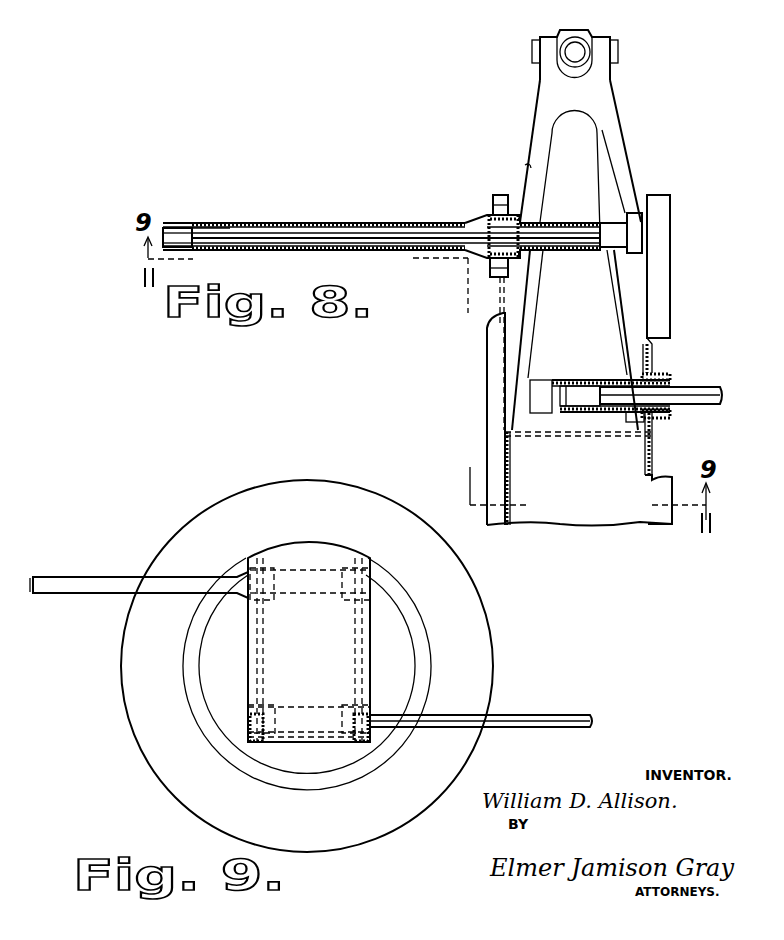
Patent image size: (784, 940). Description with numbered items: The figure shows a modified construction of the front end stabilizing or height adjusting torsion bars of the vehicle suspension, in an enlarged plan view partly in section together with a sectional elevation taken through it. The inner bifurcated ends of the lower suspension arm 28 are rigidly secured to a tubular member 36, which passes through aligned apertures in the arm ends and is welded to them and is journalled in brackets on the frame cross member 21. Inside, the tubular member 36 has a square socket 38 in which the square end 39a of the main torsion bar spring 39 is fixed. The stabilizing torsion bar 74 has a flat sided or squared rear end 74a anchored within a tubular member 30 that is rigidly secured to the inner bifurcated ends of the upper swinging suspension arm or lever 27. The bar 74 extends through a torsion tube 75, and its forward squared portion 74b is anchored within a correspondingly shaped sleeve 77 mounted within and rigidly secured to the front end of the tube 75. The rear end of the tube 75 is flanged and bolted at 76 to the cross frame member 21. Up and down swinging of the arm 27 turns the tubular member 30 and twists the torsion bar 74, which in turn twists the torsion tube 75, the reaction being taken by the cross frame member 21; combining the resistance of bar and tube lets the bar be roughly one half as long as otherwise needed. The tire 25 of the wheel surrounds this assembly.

In FIG. 8, the frame cross member 21 is at (493, 368).
In FIG. 9, the frame cross member 21 is at (312, 654).
In FIG. 9, the tire 25 is at (472, 610).
In FIG. 8, the upper swinging suspension arm or lever 27 is at (615, 150).
In FIG. 8, the lower suspension arm 28 is at (617, 273).
In FIG. 8, the tubular member 30 is at (552, 220).
In FIG. 8, the tubular member 36 is at (568, 382).
In FIG. 8, the square socket 38 is at (583, 368).
In FIG. 8, the main torsion bar spring 39 is at (693, 390).
In FIG. 9, the main torsion bar spring 39 is at (567, 698).
In FIG. 8, the square end 39a is at (580, 415).
In FIG. 8, the torsion bar 74 is at (387, 223).
In FIG. 8, the squared rear end 74a is at (573, 230).
In FIG. 8, the squared portion 74b is at (204, 230).
In FIG. 8, the torsion tube 75 is at (315, 223).
In FIG. 9, the torsion tube 75 is at (72, 582).
In FIG. 8, the flange bolting location 76 is at (495, 205).
In FIG. 8, the sleeve 77 is at (188, 223).